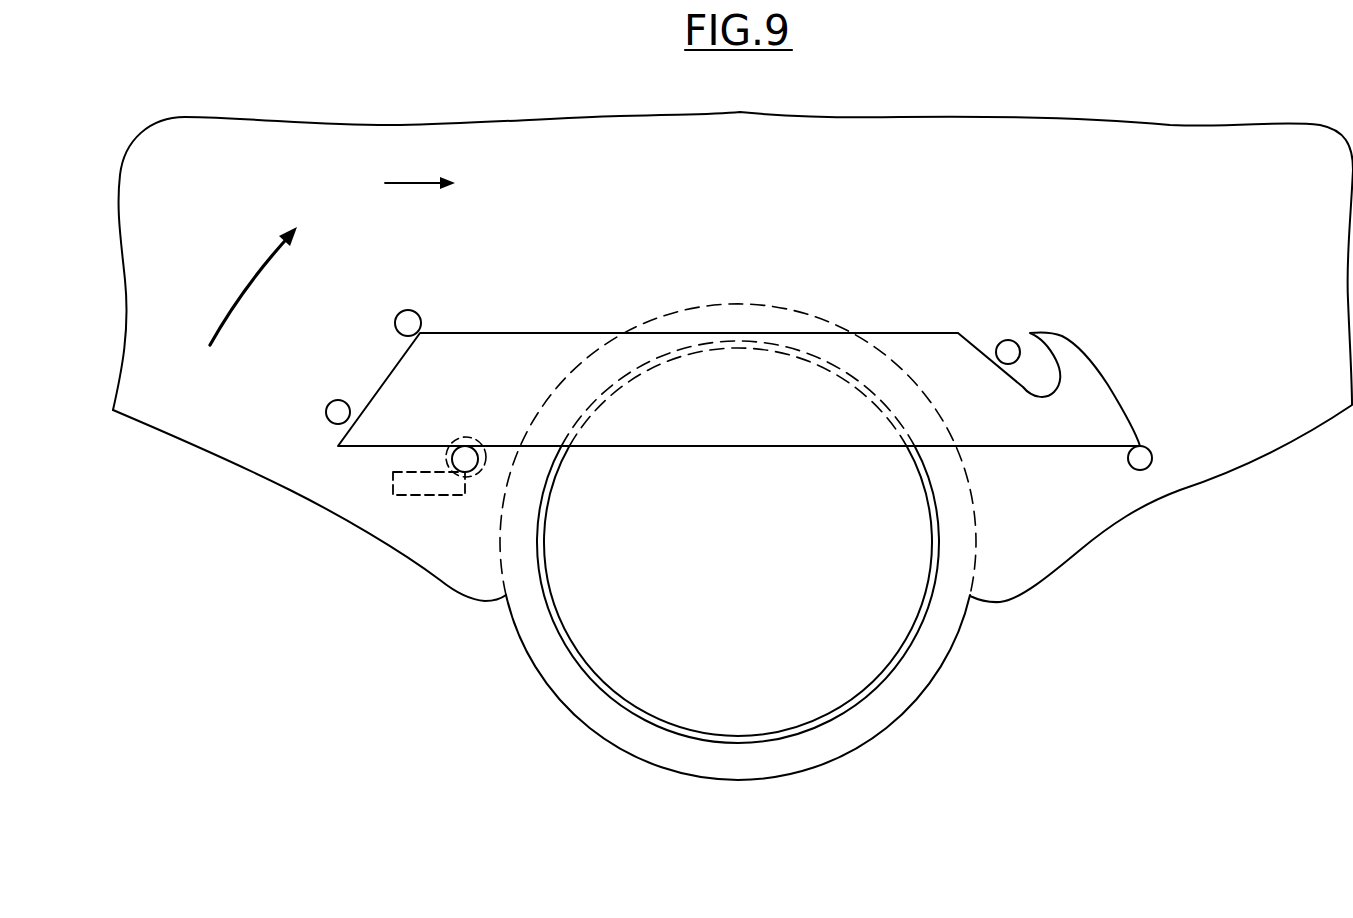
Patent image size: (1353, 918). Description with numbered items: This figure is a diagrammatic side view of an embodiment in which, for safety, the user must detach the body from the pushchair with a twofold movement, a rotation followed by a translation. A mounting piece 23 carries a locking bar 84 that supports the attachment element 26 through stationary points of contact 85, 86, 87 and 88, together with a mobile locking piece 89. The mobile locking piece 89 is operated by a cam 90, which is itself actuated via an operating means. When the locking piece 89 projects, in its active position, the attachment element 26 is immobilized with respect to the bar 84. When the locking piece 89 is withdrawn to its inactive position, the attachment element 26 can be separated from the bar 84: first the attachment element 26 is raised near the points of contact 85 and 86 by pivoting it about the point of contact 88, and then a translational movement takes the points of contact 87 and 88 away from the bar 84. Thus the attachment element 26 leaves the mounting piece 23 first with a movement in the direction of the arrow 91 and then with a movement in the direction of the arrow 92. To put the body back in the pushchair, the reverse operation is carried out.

The mounting piece 23 is at (923, 703).
The attachment element 26 is at (1112, 118).
The locking bar 84 is at (1015, 420).
The point of contact 85 is at (337, 412).
The point of contact 86 is at (408, 323).
The point of contact 87 is at (1008, 352).
The point of contact 88 is at (1140, 458).
The mobile locking piece 89 is at (465, 459).
The cam 90 is at (410, 483).
The arrow 91 is at (244, 286).
The arrow 92 is at (420, 171).